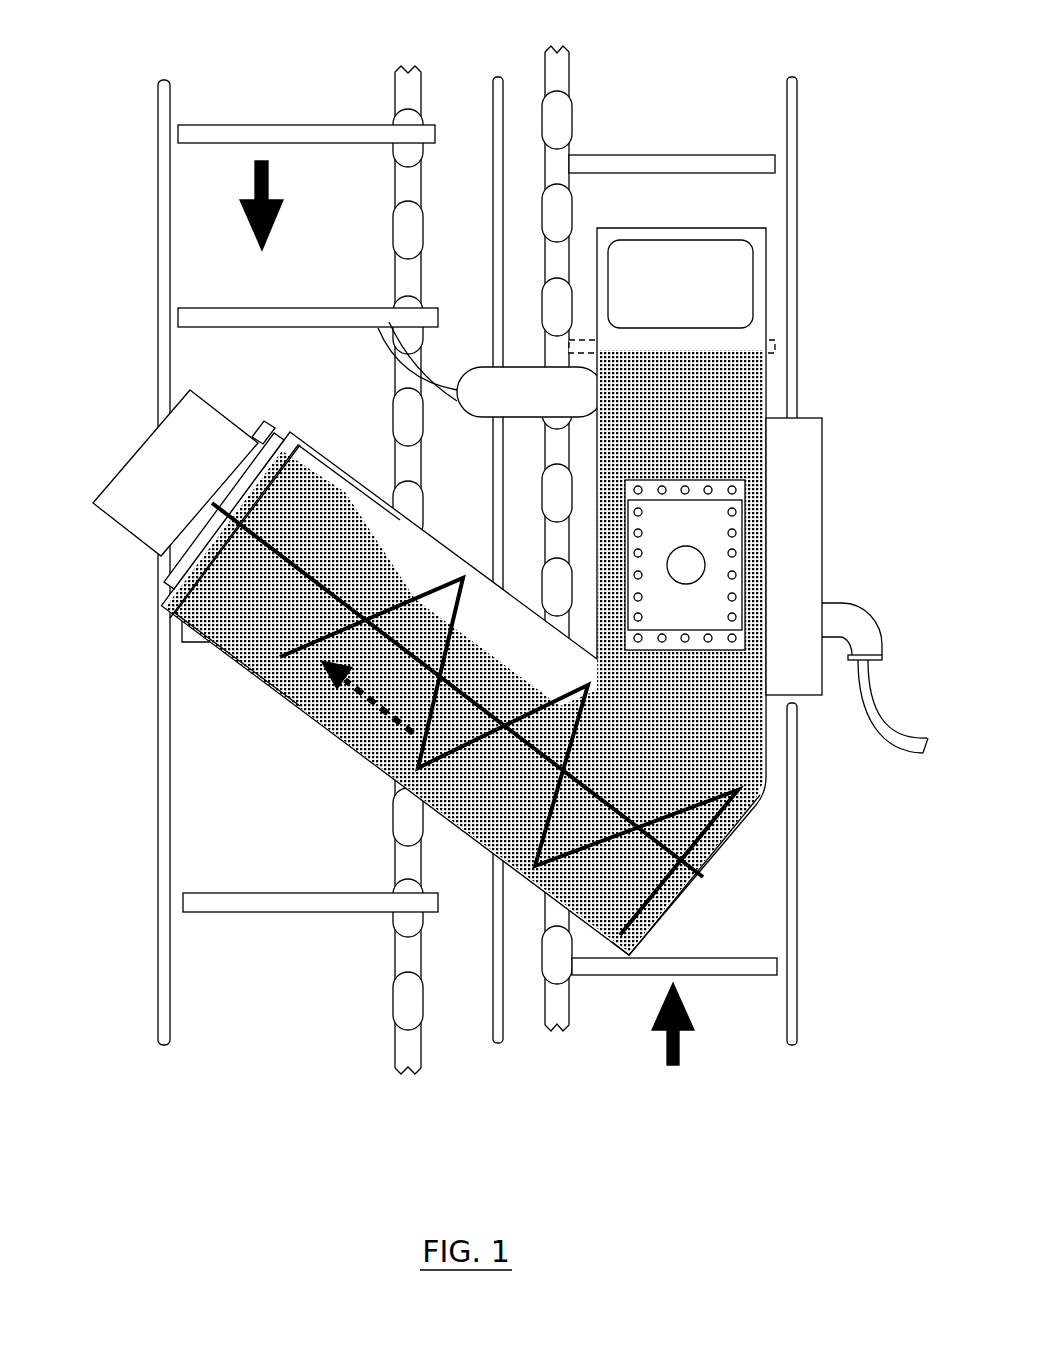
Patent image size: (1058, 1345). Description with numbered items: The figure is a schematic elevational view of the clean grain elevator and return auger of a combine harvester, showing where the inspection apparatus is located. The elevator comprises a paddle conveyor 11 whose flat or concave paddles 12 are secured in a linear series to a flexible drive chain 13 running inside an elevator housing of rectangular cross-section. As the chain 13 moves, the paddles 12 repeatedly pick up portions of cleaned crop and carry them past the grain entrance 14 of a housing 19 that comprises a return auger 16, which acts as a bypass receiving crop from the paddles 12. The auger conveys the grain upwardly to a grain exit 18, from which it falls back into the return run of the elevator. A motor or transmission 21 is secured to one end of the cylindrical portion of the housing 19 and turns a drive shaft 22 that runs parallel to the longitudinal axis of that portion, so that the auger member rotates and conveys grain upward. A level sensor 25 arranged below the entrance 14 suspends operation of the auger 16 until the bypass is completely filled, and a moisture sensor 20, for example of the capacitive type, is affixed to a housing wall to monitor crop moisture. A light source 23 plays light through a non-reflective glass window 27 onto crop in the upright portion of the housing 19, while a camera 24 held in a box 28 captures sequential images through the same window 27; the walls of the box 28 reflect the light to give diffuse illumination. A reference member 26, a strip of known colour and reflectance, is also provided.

The paddle conveyor 11 is at (421, 90).
The paddles 12 is at (237, 125).
The flexible drive chain 13 is at (559, 115).
The grain entrance 14 is at (664, 253).
The return auger 16 is at (232, 656).
The grain exit 18 is at (354, 512).
The housing 19 is at (738, 820).
The moisture sensor 20 is at (824, 698).
The motor or transmission 21 is at (106, 488).
The drive shaft 22 is at (605, 920).
The light source 23 is at (686, 480).
The camera 24 is at (688, 563).
The level sensor 25 is at (472, 370).
The reference member 26 is at (652, 482).
The glass window 27 is at (702, 534).
The box 28 is at (768, 598).